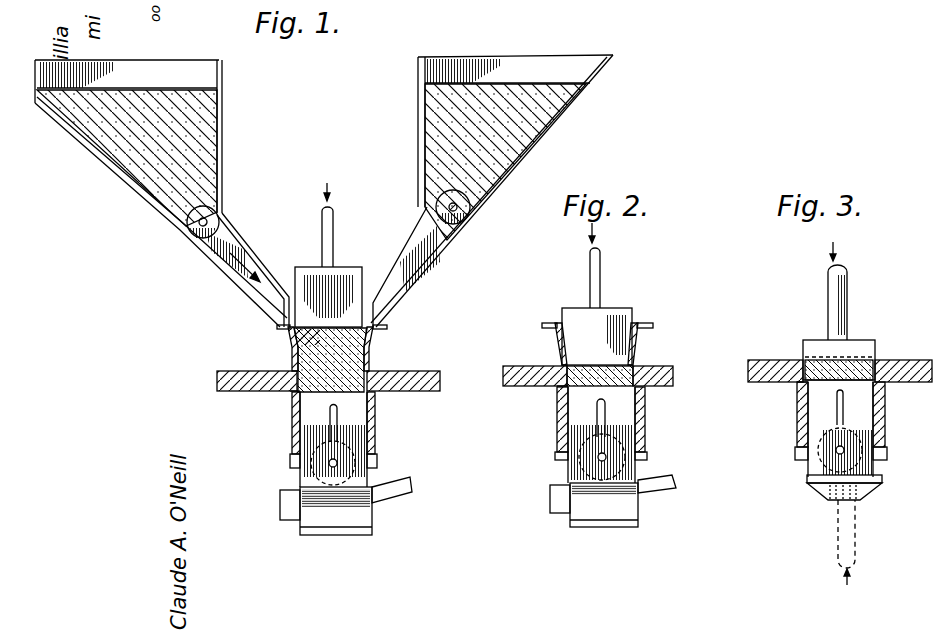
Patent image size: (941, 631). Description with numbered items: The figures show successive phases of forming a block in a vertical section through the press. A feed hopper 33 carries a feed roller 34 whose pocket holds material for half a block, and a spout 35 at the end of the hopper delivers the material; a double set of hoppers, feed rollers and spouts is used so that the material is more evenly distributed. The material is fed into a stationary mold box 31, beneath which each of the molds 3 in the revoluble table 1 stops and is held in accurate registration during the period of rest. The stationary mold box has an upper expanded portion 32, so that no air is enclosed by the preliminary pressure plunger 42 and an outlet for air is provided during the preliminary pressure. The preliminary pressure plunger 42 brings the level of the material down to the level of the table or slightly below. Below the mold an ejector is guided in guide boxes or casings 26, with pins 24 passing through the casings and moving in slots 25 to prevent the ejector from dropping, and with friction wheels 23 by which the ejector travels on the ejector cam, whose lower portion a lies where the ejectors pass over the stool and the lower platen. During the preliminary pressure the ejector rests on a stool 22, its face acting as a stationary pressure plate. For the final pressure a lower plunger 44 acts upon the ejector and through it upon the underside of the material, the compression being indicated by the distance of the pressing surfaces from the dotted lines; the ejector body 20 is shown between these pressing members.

In FIG. 1, the revoluble table 1 is at (428, 372).
In FIG. 2, the revoluble table 1 is at (673, 377).
In FIG. 3, the revoluble table 1 is at (905, 366).
In FIG. 1, the molds 3 is at (297, 392).
In FIG. 2, the molds 3 is at (557, 387).
In FIG. 3, the molds 3 is at (795, 382).
In FIG. 1, the barrel tube 20 is at (310, 422).
In FIG. 2, the barrel tube 20 is at (577, 423).
In FIG. 3, the barrel tube 20 is at (815, 413).
In FIG. 1, the stool 22 is at (317, 523).
In FIG. 2, the stool 22 is at (580, 517).
In FIG. 1, the friction wheels 23 is at (300, 476).
In FIG. 2, the friction wheels 23 is at (580, 467).
In FIG. 3, the friction wheels 23 is at (818, 477).
In FIG. 1, the pins 24 is at (338, 410).
In FIG. 2, the pins 24 is at (605, 403).
In FIG. 3, the pins 24 is at (843, 397).
In FIG. 1, the slots 25 is at (336, 432).
In FIG. 2, the slots 25 is at (607, 430).
In FIG. 3, the slots 25 is at (842, 423).
In FIG. 1, the guide boxes or casings 26 is at (295, 410).
In FIG. 2, the guide boxes or casings 26 is at (562, 407).
In FIG. 3, the guide boxes or casings 26 is at (886, 430).
In FIG. 1, the stationary mold box 31 is at (366, 358).
In FIG. 2, the stationary mold box 31 is at (640, 355).
In FIG. 1, the upper expanded portion of the stationary mold 32 is at (375, 340).
In FIG. 2, the upper expanded portion of the stationary mold 32 is at (643, 335).
In FIG. 1, the feed hopper 33 is at (222, 132).
In FIG. 1, the feed roller 34 is at (212, 215).
In FIG. 1, the spout 35 is at (258, 266).
In FIG. 1, the preliminary pressure plunger 42 is at (343, 272).
In FIG. 2, the preliminary pressure plunger 42 is at (623, 323).
In FIG. 3, the preliminary pressure plunger 42 is at (870, 343).
In FIG. 3, the lower plunger 44 is at (830, 497).
In FIG. 1, the lower portion of the ejector cam a is at (287, 510).
In FIG. 2, the lower portion of the ejector cam a is at (552, 508).